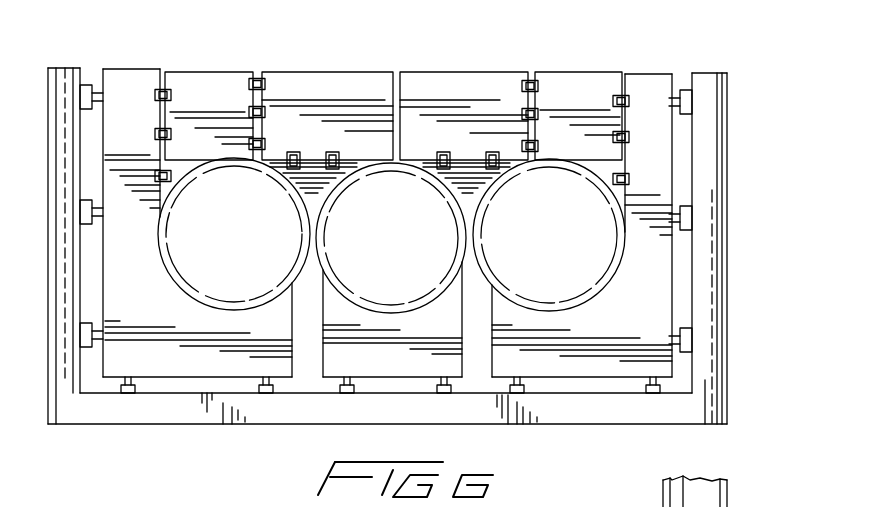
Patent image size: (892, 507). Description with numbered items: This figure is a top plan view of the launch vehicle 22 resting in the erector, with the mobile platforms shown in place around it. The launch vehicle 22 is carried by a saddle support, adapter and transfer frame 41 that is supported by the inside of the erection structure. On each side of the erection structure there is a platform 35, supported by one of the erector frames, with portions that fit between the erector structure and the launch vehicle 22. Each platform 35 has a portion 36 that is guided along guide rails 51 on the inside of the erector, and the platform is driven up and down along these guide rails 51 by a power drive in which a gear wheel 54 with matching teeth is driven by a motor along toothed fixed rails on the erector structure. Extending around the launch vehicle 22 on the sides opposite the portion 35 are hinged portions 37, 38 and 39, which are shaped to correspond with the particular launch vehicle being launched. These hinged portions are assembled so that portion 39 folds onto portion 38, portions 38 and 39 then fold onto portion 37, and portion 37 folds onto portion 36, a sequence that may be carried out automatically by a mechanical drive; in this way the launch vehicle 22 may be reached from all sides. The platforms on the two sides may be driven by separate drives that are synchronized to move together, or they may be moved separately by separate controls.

The launch vehicle 22 is at (405, 243).
The platform 35 is at (160, 308).
The guided portion of platform 36 is at (122, 270).
The hinged portion 37 is at (212, 78).
The hinged portion 38 is at (324, 78).
The hinged portion 39 is at (313, 183).
The saddle support, adapter and transfer frame 41 is at (415, 368).
The guide rails 51 is at (85, 97).
The gear wheel 54 is at (247, 389).